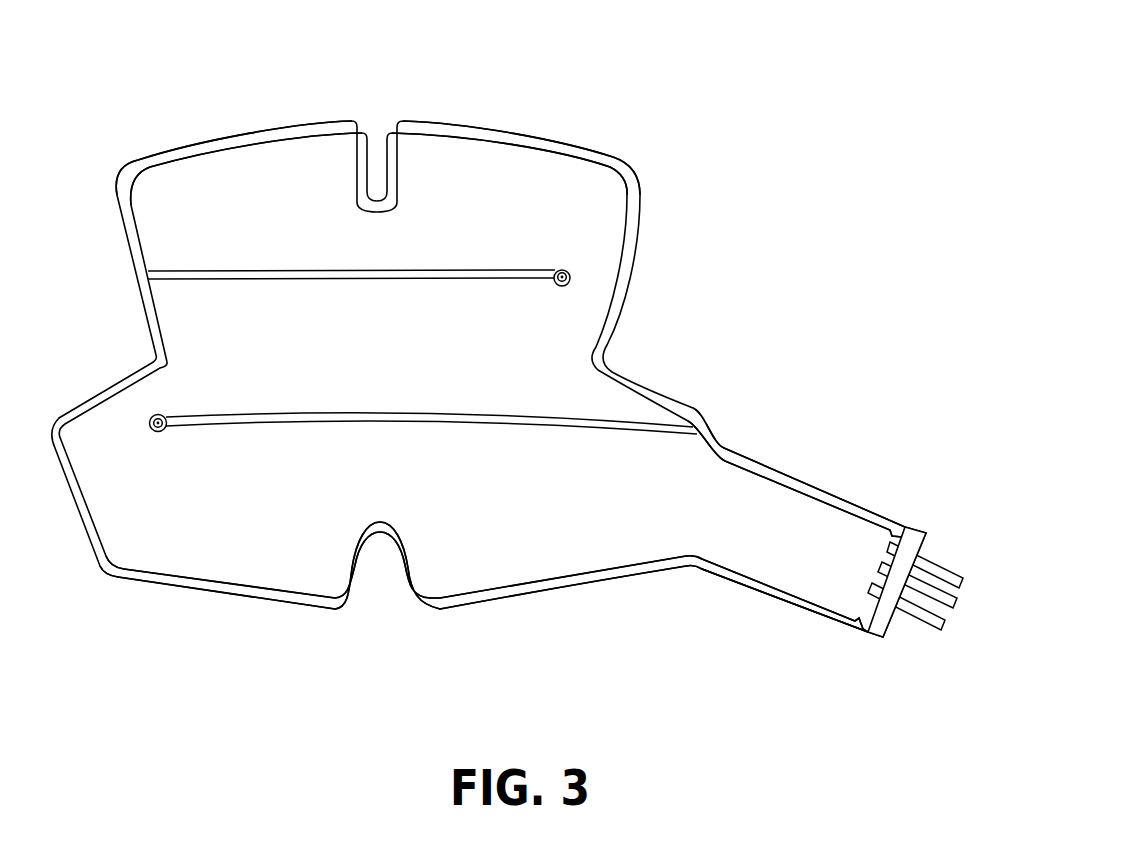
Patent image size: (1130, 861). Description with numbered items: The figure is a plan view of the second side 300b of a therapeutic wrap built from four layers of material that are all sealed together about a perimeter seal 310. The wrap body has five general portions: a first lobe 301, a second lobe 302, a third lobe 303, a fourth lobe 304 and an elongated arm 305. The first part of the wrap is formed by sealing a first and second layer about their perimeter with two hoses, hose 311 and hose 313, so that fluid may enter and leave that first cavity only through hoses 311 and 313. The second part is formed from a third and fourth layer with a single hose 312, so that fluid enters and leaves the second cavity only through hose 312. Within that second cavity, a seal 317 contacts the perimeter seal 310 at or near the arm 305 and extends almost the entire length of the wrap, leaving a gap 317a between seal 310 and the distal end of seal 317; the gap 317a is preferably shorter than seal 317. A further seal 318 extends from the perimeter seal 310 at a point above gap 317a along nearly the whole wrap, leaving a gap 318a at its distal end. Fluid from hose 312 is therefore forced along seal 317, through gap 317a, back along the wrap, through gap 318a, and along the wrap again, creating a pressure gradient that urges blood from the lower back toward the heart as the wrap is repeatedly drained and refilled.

The second side of the wrap 300b is at (846, 152).
The first lobe 301 is at (619, 138).
The second lobe 302 is at (153, 137).
The third lobe 303 is at (211, 607).
The fourth lobe 304 is at (463, 620).
The elongated arm 305 is at (737, 618).
The perimeter seal 310 is at (717, 445).
The hose 311 is at (962, 580).
The hose 312 is at (958, 600).
The hose 313 is at (932, 630).
The seal 317 is at (178, 417).
The gap 317a is at (128, 418).
The seal 318 is at (530, 274).
The gap 318a is at (577, 294).